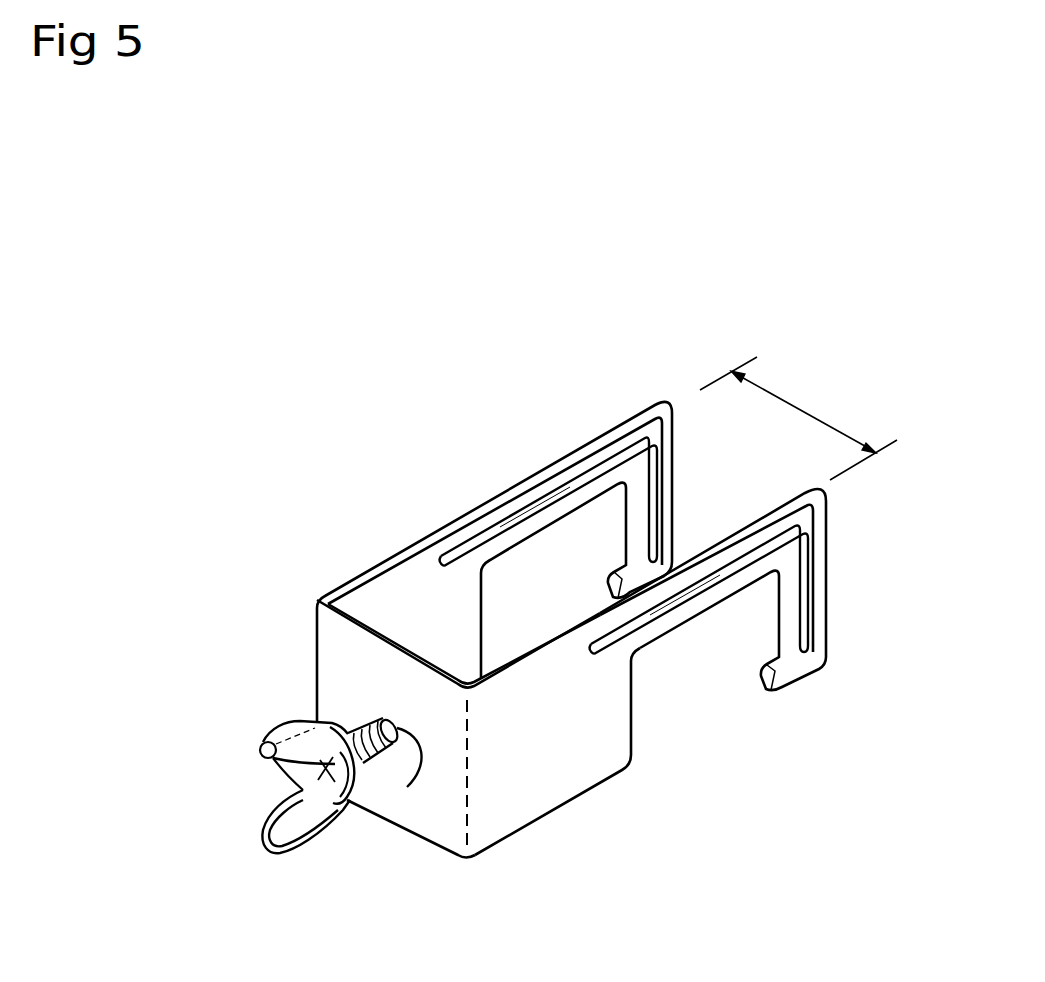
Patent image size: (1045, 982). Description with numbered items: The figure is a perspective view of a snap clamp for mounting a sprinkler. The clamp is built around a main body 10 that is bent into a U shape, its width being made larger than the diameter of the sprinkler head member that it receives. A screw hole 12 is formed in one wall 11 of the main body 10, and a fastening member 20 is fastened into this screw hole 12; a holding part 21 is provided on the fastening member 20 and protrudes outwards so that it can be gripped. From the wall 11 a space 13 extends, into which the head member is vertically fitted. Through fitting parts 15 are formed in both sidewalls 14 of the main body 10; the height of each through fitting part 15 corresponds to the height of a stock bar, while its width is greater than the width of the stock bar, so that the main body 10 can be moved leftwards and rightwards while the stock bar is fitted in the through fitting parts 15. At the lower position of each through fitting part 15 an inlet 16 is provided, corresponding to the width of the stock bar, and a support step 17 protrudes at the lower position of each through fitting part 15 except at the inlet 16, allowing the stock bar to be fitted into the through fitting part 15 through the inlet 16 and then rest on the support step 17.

The main body 10 is at (340, 558).
The wall 11 is at (427, 827).
The screw hole 12 is at (407, 787).
The space 13 is at (415, 600).
The sidewall 14 is at (568, 780).
The through fitting part 15 is at (560, 548).
The inlet 16 is at (698, 692).
The support step 17 is at (782, 672).
The fastening member 20 is at (270, 724).
The holding part 21 is at (293, 780).